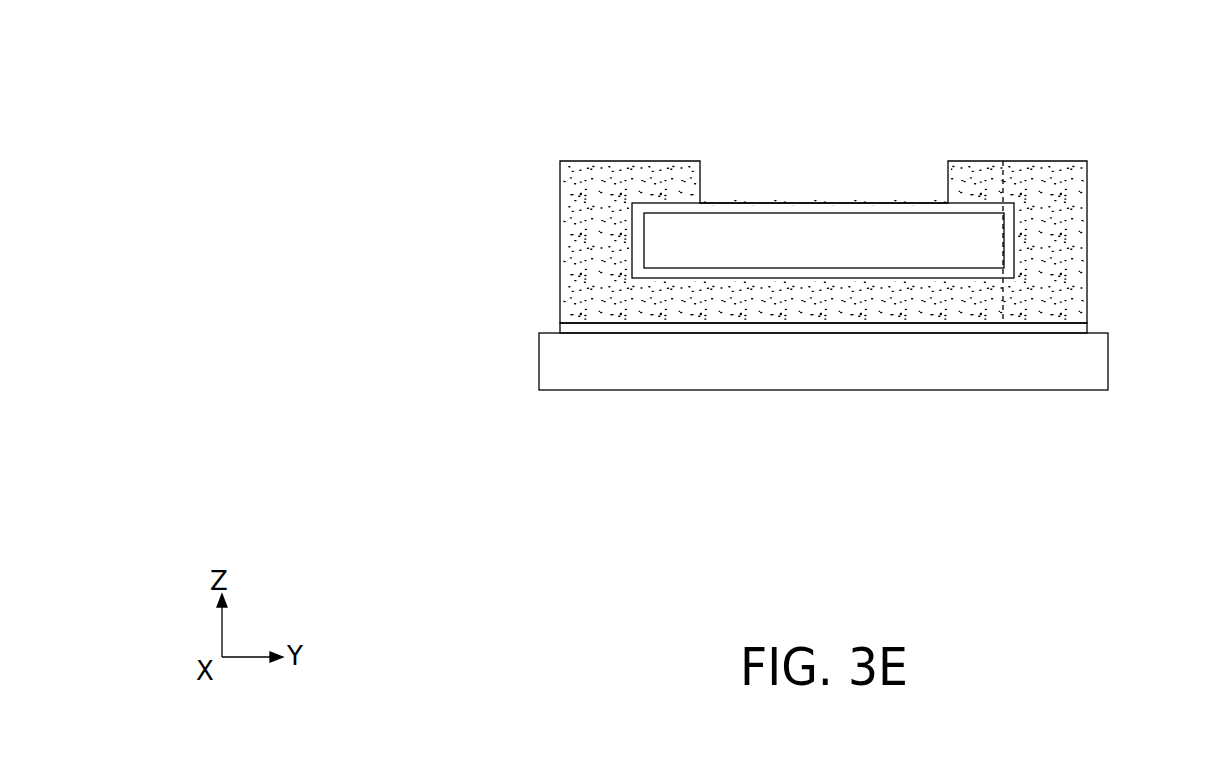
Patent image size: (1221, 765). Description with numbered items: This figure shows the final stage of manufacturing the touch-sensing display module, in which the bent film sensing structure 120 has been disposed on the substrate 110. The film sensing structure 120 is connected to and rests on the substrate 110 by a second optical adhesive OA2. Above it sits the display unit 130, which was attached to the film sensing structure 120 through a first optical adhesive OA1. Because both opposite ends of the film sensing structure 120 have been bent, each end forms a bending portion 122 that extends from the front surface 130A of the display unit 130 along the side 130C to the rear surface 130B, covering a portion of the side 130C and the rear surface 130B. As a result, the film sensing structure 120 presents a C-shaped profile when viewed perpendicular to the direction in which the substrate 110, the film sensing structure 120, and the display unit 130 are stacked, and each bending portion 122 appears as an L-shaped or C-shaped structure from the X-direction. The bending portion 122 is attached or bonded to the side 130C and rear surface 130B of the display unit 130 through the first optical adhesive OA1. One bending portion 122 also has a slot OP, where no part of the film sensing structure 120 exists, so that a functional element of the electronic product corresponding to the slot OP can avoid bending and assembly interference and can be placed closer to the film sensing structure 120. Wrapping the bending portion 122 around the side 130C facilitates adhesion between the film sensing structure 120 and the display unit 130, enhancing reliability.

The substrate 110 is at (539, 372).
The film sensing structure 120 is at (719, 338).
The bending portion 122 is at (548, 238).
The display unit 130 is at (780, 243).
The front surface 130A is at (893, 268).
The rear surface 130B is at (826, 213).
The side 130C is at (635, 243).
The first optical adhesive OA1 is at (947, 211).
The second optical adhesive OA2 is at (560, 332).
The slot OP is at (1003, 195).